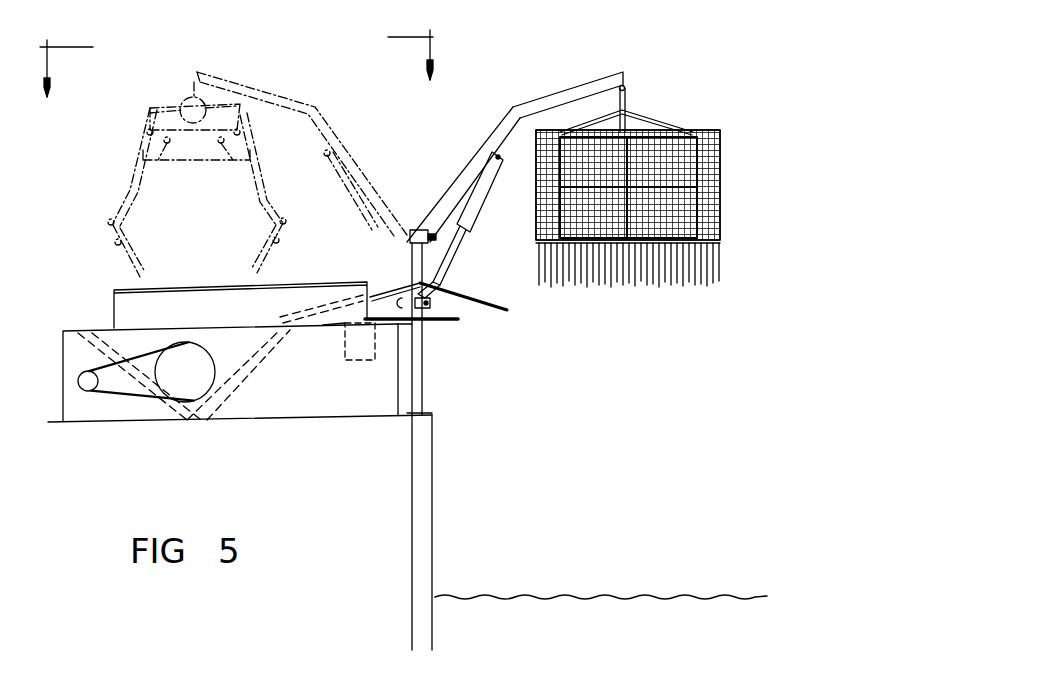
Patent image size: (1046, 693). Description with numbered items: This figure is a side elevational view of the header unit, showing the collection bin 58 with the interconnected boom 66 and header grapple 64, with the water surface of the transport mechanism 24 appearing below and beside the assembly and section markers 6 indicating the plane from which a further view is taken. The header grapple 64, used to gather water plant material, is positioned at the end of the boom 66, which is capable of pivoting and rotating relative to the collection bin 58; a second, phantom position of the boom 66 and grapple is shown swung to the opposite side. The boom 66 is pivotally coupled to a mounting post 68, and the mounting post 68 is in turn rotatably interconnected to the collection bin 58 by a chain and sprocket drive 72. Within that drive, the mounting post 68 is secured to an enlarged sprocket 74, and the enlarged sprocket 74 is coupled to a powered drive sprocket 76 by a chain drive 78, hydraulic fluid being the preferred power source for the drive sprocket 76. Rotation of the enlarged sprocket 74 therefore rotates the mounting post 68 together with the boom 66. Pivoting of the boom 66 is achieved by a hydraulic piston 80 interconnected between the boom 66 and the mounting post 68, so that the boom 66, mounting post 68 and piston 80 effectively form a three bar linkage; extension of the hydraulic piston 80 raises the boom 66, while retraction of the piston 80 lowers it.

The section line 6- 6 is at (243, 51).
The transport mechanism 24 is at (606, 588).
The collection bin 58 is at (100, 331).
The header grapple 64 is at (670, 133).
The boom 66 is at (563, 90).
The mounting post 68 is at (413, 228).
The chain and sprocket drive 72 is at (464, 328).
The enlarged sprocket 74 is at (437, 322).
The drive sprocket 76 is at (323, 325).
The chain drive 78 is at (397, 325).
The hydraulic piston 80 is at (453, 262).